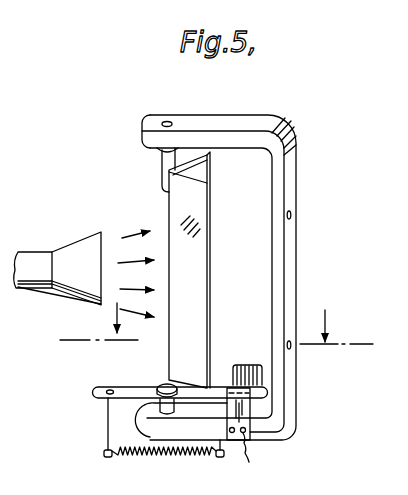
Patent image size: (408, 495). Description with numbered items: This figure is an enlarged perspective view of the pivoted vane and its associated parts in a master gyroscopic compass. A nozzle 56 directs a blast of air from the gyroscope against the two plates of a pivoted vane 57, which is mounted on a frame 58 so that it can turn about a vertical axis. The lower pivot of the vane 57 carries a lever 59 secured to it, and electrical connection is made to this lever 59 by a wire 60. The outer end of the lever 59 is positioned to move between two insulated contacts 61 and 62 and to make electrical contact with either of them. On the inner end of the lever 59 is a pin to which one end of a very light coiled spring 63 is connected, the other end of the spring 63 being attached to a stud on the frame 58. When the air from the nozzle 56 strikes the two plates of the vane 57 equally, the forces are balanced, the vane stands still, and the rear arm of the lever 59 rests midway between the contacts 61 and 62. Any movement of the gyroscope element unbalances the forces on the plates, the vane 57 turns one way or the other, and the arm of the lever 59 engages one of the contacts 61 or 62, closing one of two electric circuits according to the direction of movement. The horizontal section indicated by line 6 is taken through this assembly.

The nozzle 56 is at (75, 250).
The pivoted vane 57 is at (172, 200).
The frame 58 is at (196, 118).
The lever 59 is at (128, 387).
The wire 60 is at (180, 406).
The insulated contact 61 is at (250, 365).
The insulated contact 62 is at (250, 408).
The coiled spring 63 is at (168, 455).
The section line 6— 6 is at (216, 323).